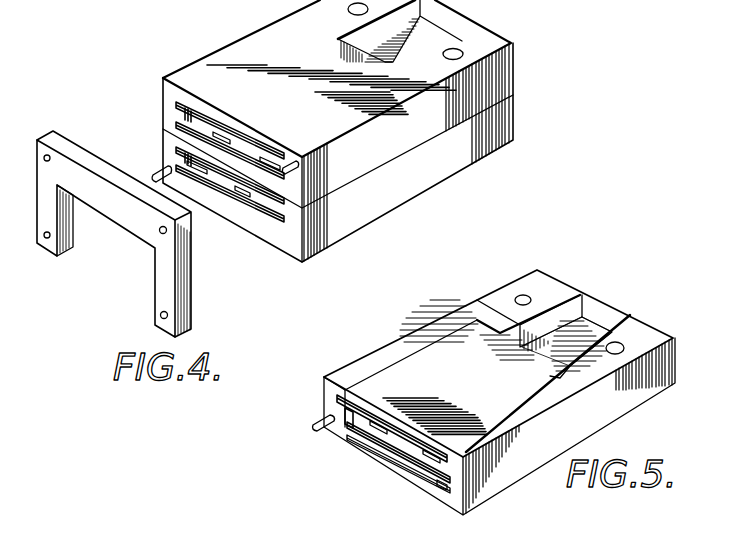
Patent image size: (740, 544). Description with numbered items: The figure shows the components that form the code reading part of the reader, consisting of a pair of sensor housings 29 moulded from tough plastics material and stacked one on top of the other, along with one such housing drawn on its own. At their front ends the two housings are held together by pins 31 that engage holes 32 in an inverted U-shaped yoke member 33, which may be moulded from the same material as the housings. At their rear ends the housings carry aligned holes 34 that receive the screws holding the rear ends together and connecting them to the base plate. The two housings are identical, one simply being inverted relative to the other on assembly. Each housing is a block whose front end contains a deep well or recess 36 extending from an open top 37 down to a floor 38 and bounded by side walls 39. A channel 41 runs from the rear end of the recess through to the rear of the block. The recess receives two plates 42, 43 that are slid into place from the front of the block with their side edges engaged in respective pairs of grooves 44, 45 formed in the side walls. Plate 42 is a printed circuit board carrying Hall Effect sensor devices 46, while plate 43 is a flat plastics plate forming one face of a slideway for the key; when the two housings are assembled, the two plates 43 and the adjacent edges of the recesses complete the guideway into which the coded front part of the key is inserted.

In FIG. 4, the sensor housing 29 is at (493, 80).
In FIG. 5, the sensor housing 29 is at (615, 412).
In FIG. 4, the pin 31 is at (153, 172).
In FIG. 5, the pin 31 is at (313, 424).
In FIG. 4, the hole 32 is at (46, 238).
In FIG. 4, the yoke member 33 is at (181, 283).
In FIG. 4, the hole 34 is at (460, 46).
In FIG. 5, the hole 34 is at (616, 348).
In FIG. 5, the recess 36 is at (420, 473).
In FIG. 5, the open top 37 is at (483, 322).
In FIG. 5, the floor 38 is at (393, 455).
In FIG. 5, the side wall 39 is at (357, 420).
In FIG. 5, the channel 41 is at (597, 317).
In FIG. 5, the plate 42 is at (365, 436).
In FIG. 5, the plate 43 is at (385, 387).
In FIG. 5, the groove 44 is at (338, 404).
In FIG. 5, the groove 45 is at (323, 378).
In FIG. 4, the Hall Effect sensor device 46 is at (241, 194).